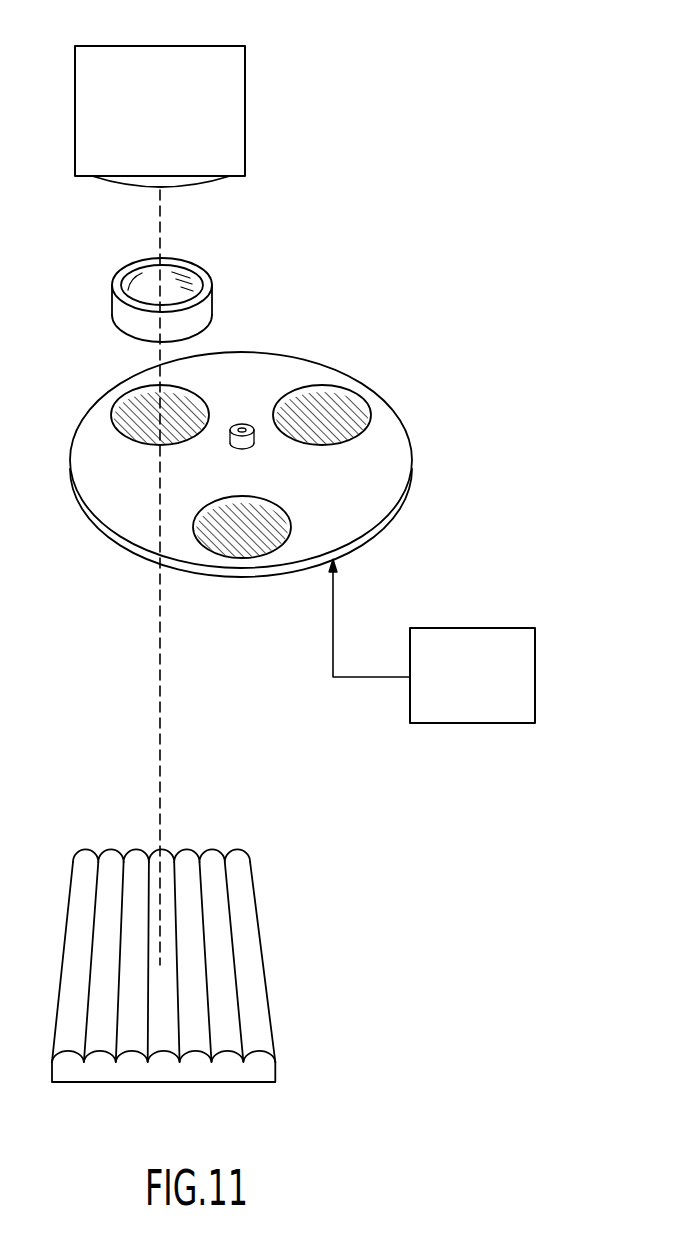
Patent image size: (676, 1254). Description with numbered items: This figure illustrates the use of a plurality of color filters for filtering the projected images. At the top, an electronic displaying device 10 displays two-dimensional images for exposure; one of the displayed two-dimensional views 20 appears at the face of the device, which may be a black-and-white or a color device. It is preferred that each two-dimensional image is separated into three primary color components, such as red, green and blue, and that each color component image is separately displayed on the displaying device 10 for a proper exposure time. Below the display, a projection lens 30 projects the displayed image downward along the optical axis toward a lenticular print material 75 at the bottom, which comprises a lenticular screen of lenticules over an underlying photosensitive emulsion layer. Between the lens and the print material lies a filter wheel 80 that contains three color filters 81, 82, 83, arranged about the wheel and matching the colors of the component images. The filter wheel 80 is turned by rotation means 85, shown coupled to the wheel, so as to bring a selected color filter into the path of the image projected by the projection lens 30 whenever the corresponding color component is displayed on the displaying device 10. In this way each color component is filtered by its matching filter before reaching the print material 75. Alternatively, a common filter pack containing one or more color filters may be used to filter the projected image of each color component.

The electronic displaying device 10 is at (237, 138).
The displayed 2D view 20 is at (198, 180).
The projection lens 30 is at (110, 307).
The lenticular print material 75 is at (263, 1068).
The filter wheel 80 is at (393, 458).
The color filter 81 is at (150, 393).
The color filter 82 is at (352, 398).
The color filter 83 is at (260, 550).
The rotation means 85 is at (500, 713).